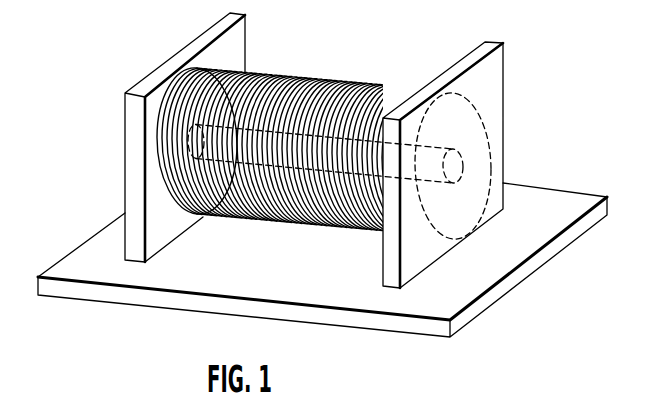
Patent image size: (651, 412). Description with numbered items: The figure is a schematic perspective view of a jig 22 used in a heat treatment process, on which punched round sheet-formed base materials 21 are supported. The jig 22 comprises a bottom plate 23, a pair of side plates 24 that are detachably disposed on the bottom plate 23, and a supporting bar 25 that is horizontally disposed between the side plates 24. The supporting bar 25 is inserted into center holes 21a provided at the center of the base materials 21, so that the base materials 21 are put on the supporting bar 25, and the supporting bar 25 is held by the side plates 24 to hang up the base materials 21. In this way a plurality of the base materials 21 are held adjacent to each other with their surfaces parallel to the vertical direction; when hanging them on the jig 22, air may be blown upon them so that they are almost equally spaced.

The sheet-formed base material 21 is at (313, 82).
The center hole 21a is at (463, 165).
The jig 22 is at (515, 36).
The bottom plate 23 is at (482, 275).
The side plate 24 is at (154, 79).
The supporting bar 25 is at (378, 90).